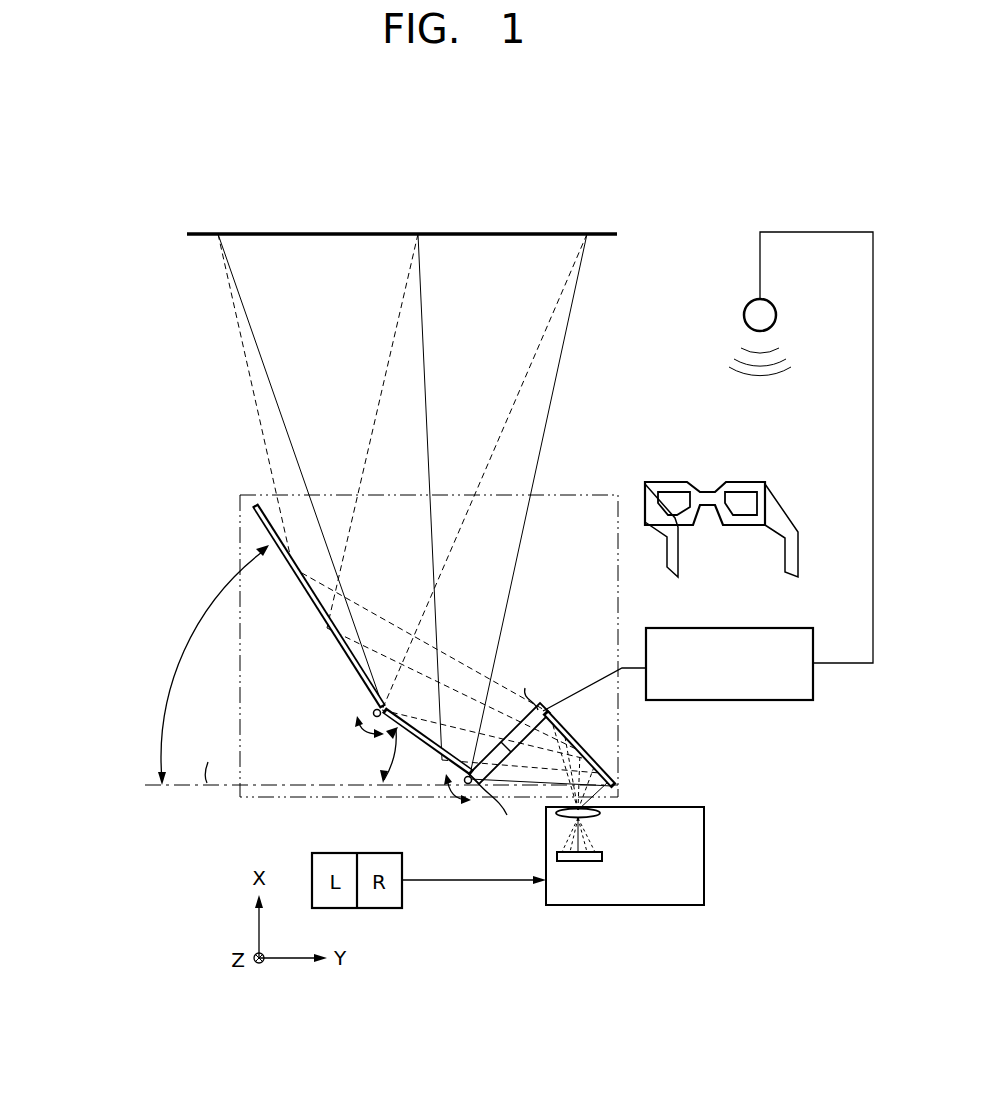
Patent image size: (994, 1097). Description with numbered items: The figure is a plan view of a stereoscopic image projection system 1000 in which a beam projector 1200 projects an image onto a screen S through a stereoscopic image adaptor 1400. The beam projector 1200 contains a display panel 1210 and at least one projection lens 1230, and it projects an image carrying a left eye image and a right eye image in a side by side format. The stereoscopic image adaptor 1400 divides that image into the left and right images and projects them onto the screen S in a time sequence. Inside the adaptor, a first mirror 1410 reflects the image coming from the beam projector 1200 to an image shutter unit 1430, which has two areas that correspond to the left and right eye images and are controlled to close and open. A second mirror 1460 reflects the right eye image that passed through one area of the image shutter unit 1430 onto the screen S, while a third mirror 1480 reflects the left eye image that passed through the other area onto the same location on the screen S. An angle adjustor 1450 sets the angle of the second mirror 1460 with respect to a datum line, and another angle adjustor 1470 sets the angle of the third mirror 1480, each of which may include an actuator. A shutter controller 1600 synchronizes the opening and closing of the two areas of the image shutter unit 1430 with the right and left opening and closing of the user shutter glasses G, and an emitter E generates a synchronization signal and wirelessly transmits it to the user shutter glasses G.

The stereoscopic image projection system 1000 is at (134, 196).
The beam projector 1200 is at (625, 906).
The display panel 1210 is at (603, 857).
The projection lens 1230 is at (603, 814).
The stereoscopic image adaptor 1400 is at (240, 532).
The first mirror 1410 is at (617, 786).
The image shutter unit 1430 is at (552, 705).
The angle adjustor 1450 is at (471, 787).
The second mirror 1460 is at (430, 757).
The angle adjustor 1470 is at (373, 713).
The third mirror 1480 is at (333, 628).
The shutter controller 1600 is at (733, 702).
The screen S is at (313, 228).
The emitter E is at (742, 315).
The user shutter glasses G is at (743, 480).